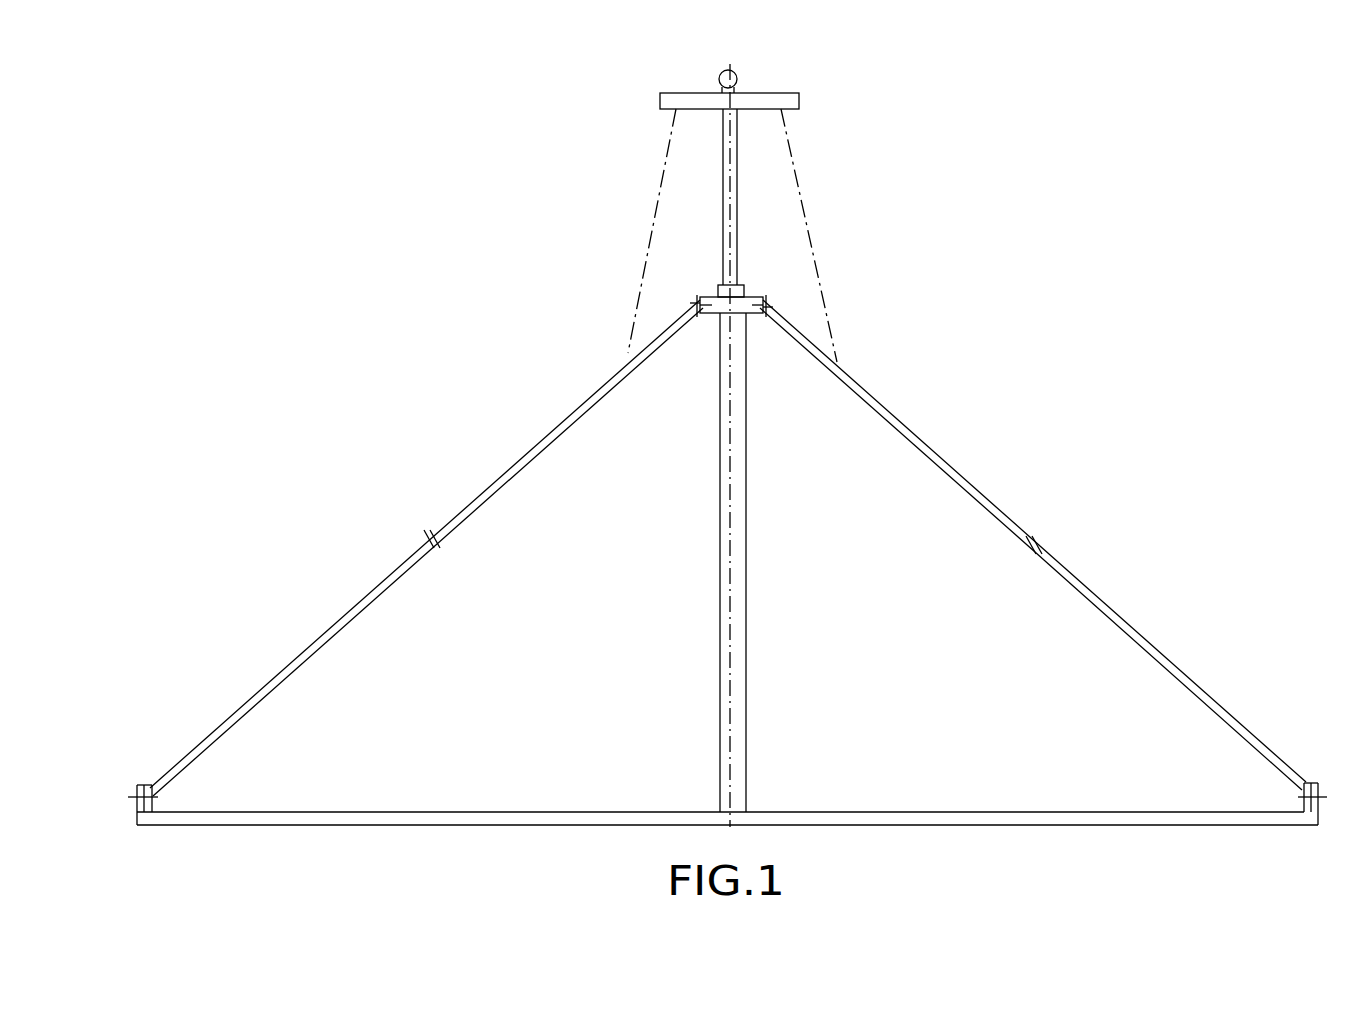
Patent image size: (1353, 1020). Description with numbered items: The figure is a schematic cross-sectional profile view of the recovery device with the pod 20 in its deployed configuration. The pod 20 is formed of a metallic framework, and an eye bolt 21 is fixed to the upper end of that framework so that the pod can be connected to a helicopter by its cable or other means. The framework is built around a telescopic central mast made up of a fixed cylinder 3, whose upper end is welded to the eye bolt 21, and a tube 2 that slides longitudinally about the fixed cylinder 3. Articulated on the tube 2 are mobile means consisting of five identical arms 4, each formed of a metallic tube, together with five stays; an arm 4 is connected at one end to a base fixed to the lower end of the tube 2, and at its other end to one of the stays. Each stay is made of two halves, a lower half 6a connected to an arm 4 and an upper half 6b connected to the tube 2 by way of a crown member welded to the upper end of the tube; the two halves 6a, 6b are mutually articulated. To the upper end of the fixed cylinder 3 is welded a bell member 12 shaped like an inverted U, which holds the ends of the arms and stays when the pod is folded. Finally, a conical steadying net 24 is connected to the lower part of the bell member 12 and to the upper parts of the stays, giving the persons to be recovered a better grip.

The tube 2 is at (737, 713).
The fixed cylinder 3 is at (723, 258).
The arm 4 is at (437, 822).
The lower half of stay 6a is at (1175, 668).
The upper half of stay 6b is at (937, 460).
The bell member 12 is at (800, 104).
The pod 20 is at (432, 250).
The eye bolt 21 is at (737, 75).
The steadying net 24 is at (808, 222).